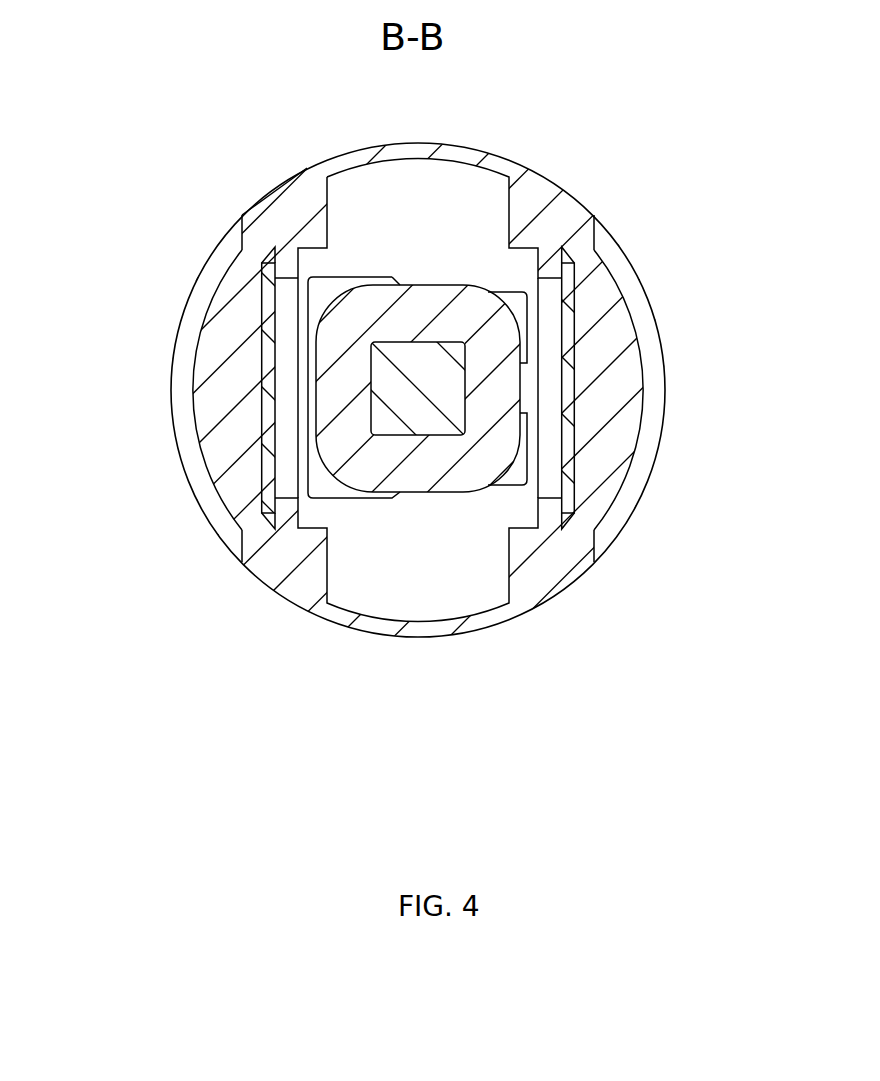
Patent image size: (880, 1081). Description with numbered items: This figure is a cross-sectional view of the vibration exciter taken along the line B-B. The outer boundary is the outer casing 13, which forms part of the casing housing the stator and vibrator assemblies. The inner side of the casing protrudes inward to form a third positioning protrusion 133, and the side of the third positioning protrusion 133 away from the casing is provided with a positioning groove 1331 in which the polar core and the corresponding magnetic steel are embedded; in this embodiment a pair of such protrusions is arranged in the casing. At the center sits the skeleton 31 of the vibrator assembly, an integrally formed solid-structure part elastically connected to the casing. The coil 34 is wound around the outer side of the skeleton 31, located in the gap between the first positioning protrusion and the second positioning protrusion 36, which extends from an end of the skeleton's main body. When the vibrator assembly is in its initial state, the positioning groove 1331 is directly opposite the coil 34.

The outer casing 13 is at (341, 612).
The third positioning protrusion 133 is at (225, 404).
The positioning groove 1331 is at (240, 532).
The skeleton 31 is at (423, 417).
The coil 34 is at (500, 372).
The second positioning protrusion 36 is at (512, 472).